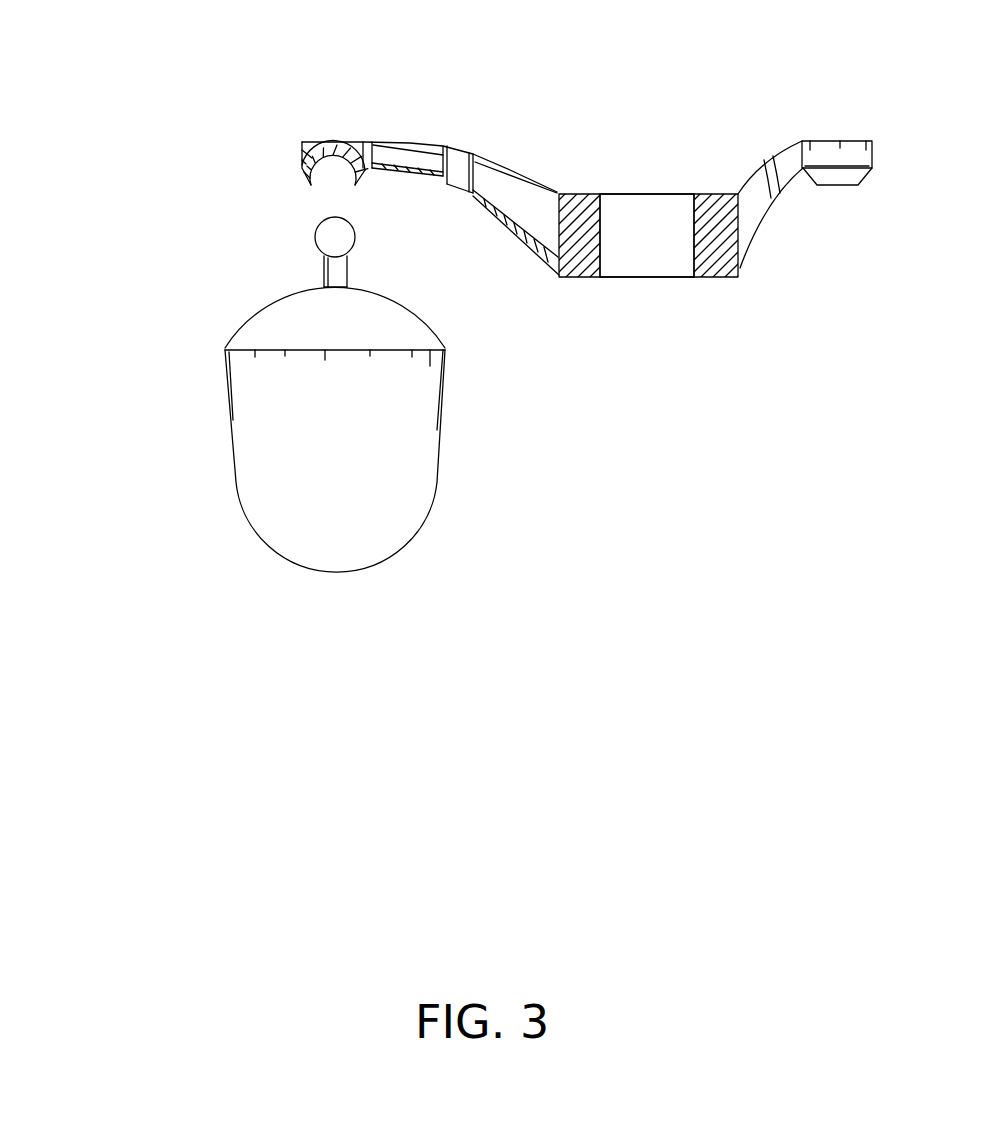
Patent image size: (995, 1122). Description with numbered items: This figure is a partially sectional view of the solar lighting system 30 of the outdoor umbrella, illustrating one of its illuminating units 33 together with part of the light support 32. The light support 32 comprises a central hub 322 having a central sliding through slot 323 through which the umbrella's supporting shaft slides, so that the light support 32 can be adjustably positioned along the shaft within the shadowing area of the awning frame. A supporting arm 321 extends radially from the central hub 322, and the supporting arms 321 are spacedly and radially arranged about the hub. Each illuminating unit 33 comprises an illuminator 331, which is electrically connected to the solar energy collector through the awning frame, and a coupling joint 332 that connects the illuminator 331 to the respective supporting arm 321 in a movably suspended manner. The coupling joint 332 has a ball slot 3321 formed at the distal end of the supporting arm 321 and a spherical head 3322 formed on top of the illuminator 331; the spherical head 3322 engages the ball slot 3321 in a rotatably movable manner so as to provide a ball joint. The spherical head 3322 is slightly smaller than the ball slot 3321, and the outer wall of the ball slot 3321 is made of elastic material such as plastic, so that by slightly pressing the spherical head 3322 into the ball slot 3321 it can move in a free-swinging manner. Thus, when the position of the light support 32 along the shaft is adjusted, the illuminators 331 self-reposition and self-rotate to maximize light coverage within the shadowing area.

The solar lighting system 30 is at (231, 109).
The light support 32 is at (619, 96).
The supporting arm 321 is at (500, 182).
The central hub 322 is at (585, 268).
The central sliding through slot 323 is at (645, 213).
The ball slot 3321 is at (333, 176).
The illuminating unit 33 is at (118, 367).
The illuminator 331 is at (258, 520).
The coupling joint 332 is at (194, 255).
The spherical head 3322 is at (337, 240).